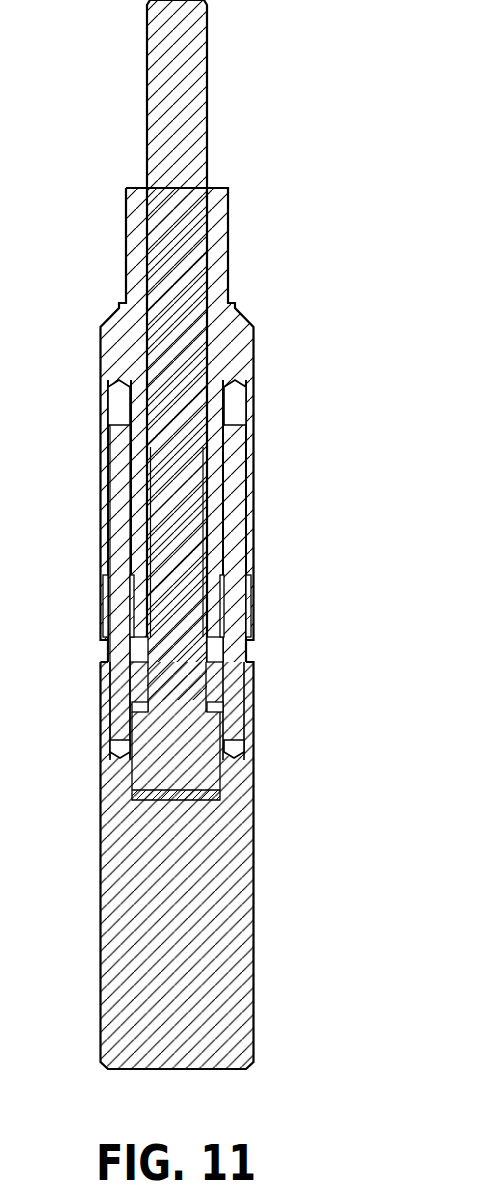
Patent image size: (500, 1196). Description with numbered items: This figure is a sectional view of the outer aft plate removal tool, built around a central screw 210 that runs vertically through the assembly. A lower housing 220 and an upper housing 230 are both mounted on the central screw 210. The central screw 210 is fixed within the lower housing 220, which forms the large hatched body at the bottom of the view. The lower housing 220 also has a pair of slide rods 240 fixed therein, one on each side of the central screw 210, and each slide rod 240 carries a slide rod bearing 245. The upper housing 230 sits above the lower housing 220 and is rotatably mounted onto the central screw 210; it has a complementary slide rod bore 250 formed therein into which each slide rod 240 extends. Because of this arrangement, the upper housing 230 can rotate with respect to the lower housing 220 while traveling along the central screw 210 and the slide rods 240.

The central screw 210 is at (208, 132).
The lower housing 220 is at (250, 720).
The upper housing 230 is at (245, 318).
The slide rod 240 is at (115, 495).
The slide rod bearing 245 is at (253, 613).
The slide rod bore 250 is at (233, 412).